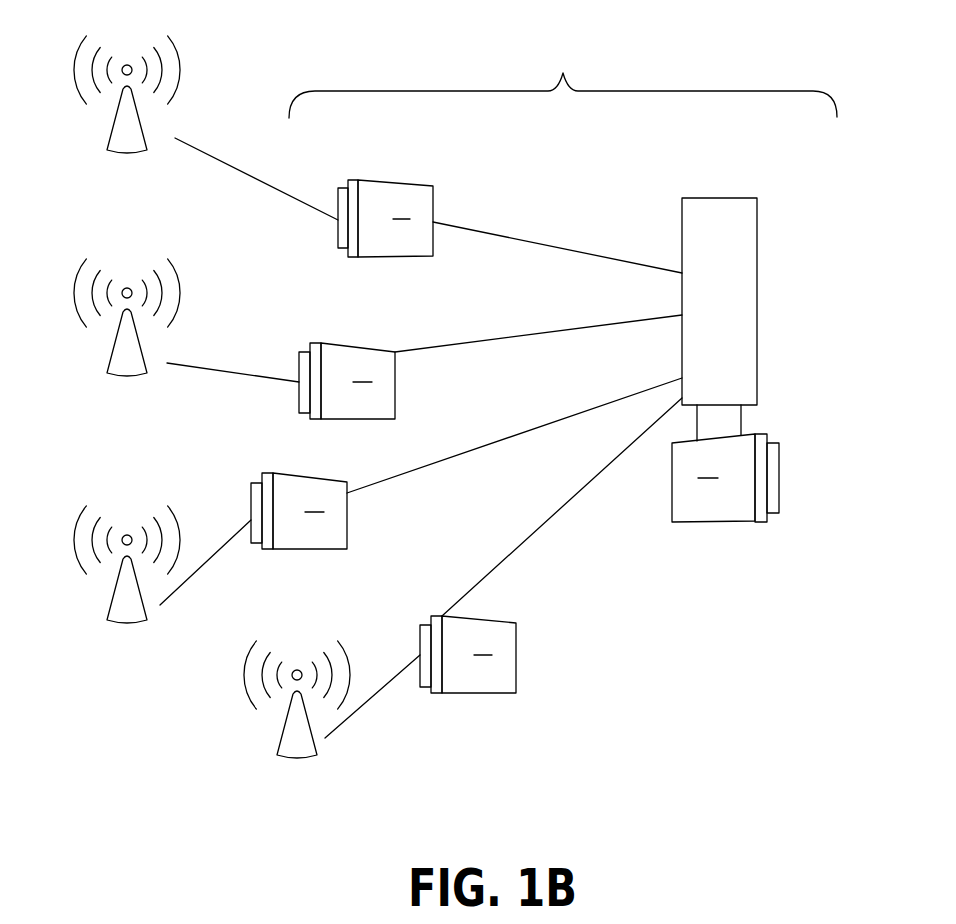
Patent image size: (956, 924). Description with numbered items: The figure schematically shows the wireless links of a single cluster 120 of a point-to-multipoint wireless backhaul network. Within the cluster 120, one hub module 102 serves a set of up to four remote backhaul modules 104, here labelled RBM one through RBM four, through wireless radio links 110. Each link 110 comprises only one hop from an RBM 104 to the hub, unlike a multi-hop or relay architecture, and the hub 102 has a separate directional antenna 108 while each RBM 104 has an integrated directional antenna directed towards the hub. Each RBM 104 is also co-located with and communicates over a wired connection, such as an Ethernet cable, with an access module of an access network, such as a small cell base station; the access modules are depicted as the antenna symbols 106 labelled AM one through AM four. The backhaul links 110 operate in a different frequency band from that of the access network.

The hub module 102 is at (779, 478).
The remote backhaul module 104 is at (394, 181).
The antenna module (AM) 106 is at (193, 421).
The access module 108 is at (757, 291).
The wireless link 110 is at (630, 263).
The cluster 120 is at (563, 78).